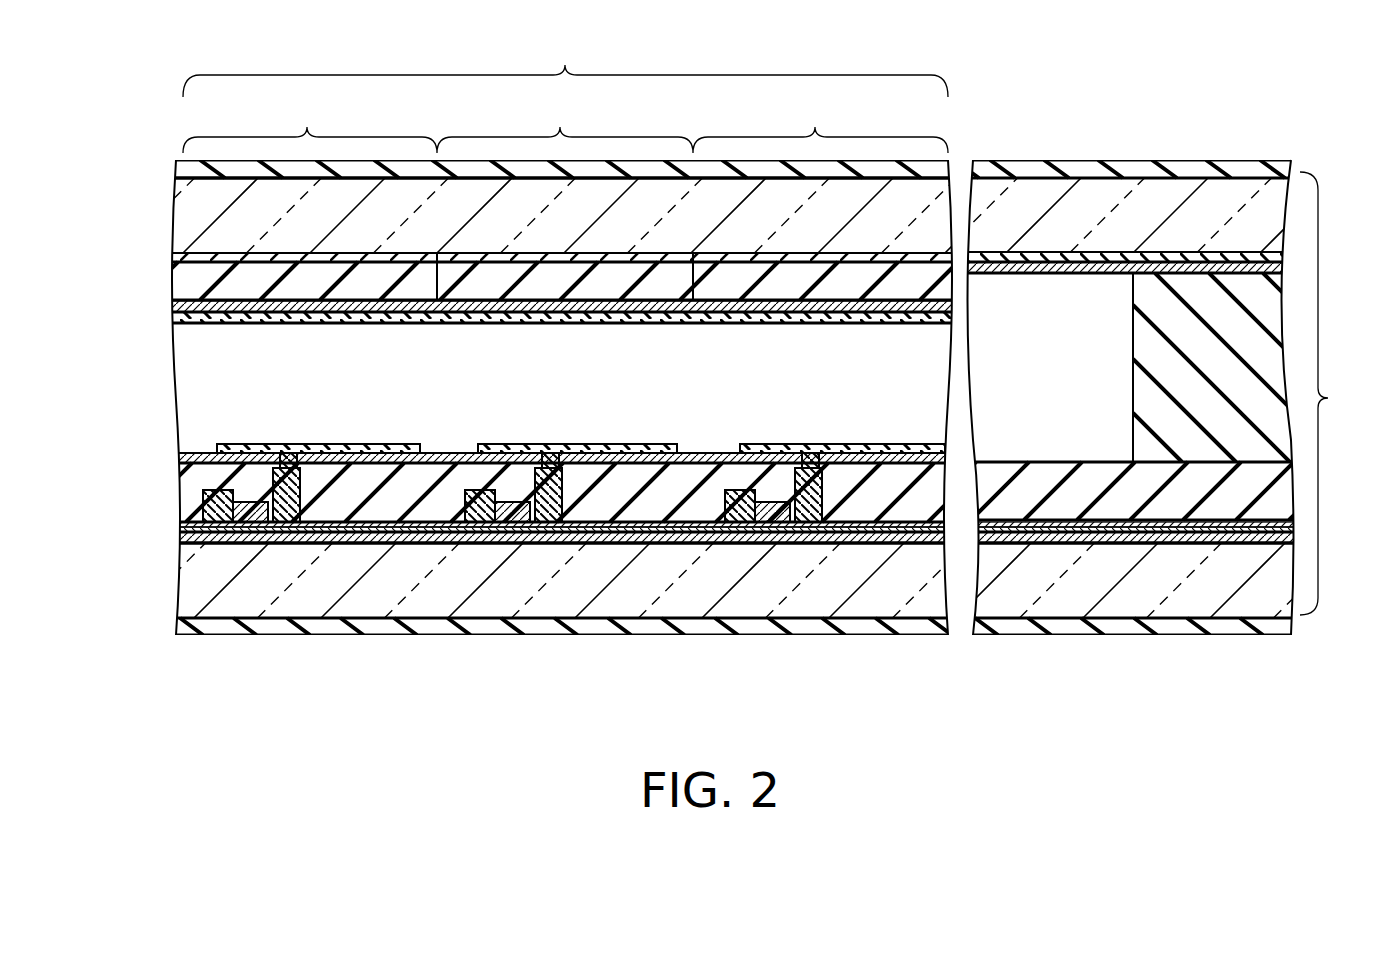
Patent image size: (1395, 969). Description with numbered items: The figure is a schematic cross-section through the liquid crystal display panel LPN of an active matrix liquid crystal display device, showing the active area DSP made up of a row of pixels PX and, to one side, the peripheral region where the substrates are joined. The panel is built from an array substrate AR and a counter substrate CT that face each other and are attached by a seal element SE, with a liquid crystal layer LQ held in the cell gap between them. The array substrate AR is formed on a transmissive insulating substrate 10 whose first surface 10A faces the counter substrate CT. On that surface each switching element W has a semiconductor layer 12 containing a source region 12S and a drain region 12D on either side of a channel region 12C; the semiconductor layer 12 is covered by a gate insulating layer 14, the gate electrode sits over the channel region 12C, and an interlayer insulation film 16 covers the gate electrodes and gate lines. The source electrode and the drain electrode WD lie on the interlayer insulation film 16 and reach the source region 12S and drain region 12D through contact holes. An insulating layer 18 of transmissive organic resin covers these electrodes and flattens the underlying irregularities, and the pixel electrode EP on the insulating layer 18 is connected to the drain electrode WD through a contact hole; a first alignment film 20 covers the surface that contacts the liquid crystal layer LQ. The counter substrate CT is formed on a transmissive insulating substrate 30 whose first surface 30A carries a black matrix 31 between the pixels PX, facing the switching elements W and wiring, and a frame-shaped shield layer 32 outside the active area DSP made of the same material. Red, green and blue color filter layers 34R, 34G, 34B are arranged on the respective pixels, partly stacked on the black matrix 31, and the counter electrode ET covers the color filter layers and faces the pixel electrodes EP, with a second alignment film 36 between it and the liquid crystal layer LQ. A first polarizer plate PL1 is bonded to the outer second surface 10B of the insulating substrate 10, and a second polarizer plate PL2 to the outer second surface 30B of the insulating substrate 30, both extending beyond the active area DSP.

The insulating substrate 10 is at (180, 578).
The first surface of insulating substrate 10A is at (598, 537).
The second surface of insulating substrate 10B is at (710, 630).
The semiconductor layer 12 is at (600, 660).
The source region 12S is at (480, 543).
The channel region 12C is at (510, 543).
The drain region 12D is at (540, 543).
The gate insulating layer 14 is at (178, 539).
The interlayer insulation film 16 is at (178, 527).
The insulating layer 18 is at (182, 477).
The first alignment film 20 is at (178, 459).
The insulating substrate 30 is at (178, 228).
The first surface of insulating substrate 30A is at (620, 270).
The second surface of insulating substrate 30B is at (643, 170).
The black matrix 31 is at (178, 258).
The shield layer 32 is at (1280, 246).
The green color filter layer 34G is at (255, 300).
The blue color filter layer 34B is at (560, 300).
The red color filter layer 34R is at (808, 300).
The second alignment film 36 is at (178, 318).
The array substrate AR is at (165, 604).
The counter substrate CT is at (165, 207).
The liquid crystal layer LQ is at (178, 392).
The first polarizer plate PL1 is at (178, 626).
The second polarizer plate PL2 is at (180, 166).
The counter electrode ET is at (178, 306).
The pixel electrode EP is at (330, 448).
The seal element SE is at (1134, 365).
The switching element W is at (280, 558).
The drain electrode WD is at (548, 495).
The active area DSP is at (565, 66).
The pixel PX is at (565, 124).
The liquid crystal display panel LPN is at (1341, 393).